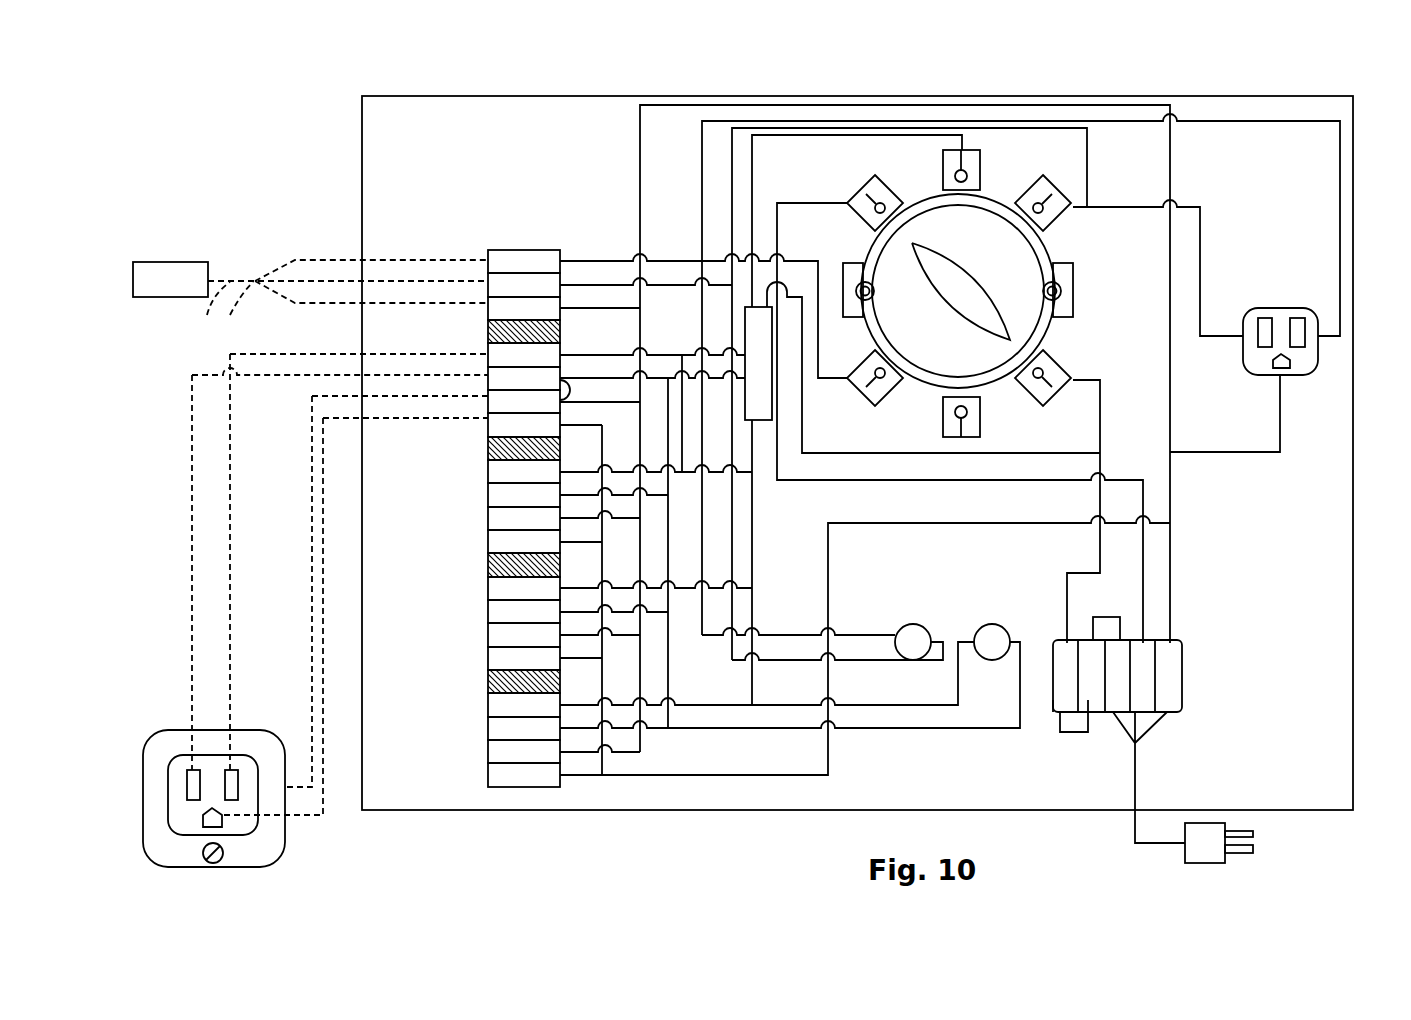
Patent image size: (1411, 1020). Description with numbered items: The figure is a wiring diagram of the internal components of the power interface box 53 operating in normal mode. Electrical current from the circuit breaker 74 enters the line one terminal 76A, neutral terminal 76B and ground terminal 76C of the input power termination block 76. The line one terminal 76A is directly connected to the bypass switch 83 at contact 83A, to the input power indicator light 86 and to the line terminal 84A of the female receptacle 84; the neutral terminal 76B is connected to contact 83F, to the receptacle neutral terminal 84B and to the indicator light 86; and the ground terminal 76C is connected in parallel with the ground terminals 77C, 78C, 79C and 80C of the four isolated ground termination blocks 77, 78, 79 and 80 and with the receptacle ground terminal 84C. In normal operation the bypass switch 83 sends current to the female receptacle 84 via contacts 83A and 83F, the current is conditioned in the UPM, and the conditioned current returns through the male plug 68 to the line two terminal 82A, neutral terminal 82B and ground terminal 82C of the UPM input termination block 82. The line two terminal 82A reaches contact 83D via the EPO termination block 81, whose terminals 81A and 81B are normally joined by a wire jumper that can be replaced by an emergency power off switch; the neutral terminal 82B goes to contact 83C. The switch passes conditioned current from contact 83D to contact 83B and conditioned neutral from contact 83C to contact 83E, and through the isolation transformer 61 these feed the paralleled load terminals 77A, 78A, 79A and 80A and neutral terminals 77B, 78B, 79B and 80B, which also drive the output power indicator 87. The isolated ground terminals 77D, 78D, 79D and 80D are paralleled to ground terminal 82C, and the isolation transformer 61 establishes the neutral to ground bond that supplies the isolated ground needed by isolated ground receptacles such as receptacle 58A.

The power interface box 53 is at (577, 94).
The circuit breaker 74 is at (185, 273).
The isolated ground receptacle 58A is at (277, 833).
The isolation transformer 61 is at (762, 413).
The male plug 68 is at (1198, 852).
The input power termination block 76 is at (645, 290).
The line 1 terminal 76A is at (540, 253).
The neutral terminal 76B is at (543, 282).
The ground terminal 76C is at (545, 306).
The isolated ground termination block 77 is at (468, 379).
The load terminal 77A is at (488, 355).
The neutral terminal 77B is at (488, 378).
The ground terminal 77C is at (488, 402).
The isolated ground terminal 77D is at (488, 425).
The isolated ground termination block 78 is at (564, 503).
The load terminal 78A is at (488, 472).
The neutral terminal 78B is at (488, 495).
The ground terminal 78C is at (488, 518).
The isolated ground terminal 78D is at (488, 542).
The isolated ground termination block 79 is at (564, 622).
The load terminal 79A is at (488, 588).
The neutral terminal 79B is at (488, 612).
The ground terminal 79C is at (488, 635).
The isolated ground terminal 79D is at (488, 658).
The isolated ground termination block 80 is at (773, 661).
The load terminal 80A is at (488, 705).
The neutral terminal 80B is at (488, 728).
The ground terminal 80C is at (488, 752).
The isolated ground terminal 80D is at (488, 775).
The EPO termination block 81 is at (1050, 686).
The EPO terminal 81A is at (1052, 703).
The EPO terminal 81B is at (1088, 707).
The UPM input termination block 82 is at (1132, 691).
The line 2 terminal 82A is at (1113, 705).
The neutral terminal 82B is at (1143, 705).
The ground terminal 82C is at (1170, 707).
The bypass switch 83 is at (963, 264).
The contact 83A is at (893, 392).
The contact 83B is at (942, 186).
The contact 83C is at (867, 222).
The contact 83D is at (1027, 403).
The contact 83E is at (982, 413).
The contact 83F is at (1062, 218).
The female receptacle 84 is at (1327, 324).
The line terminal 84A is at (1305, 330).
The neutral terminal 84B is at (1265, 318).
The ground terminal 84C is at (1285, 372).
The input power indicator light 86 is at (915, 660).
The output power indicator 87 is at (997, 660).